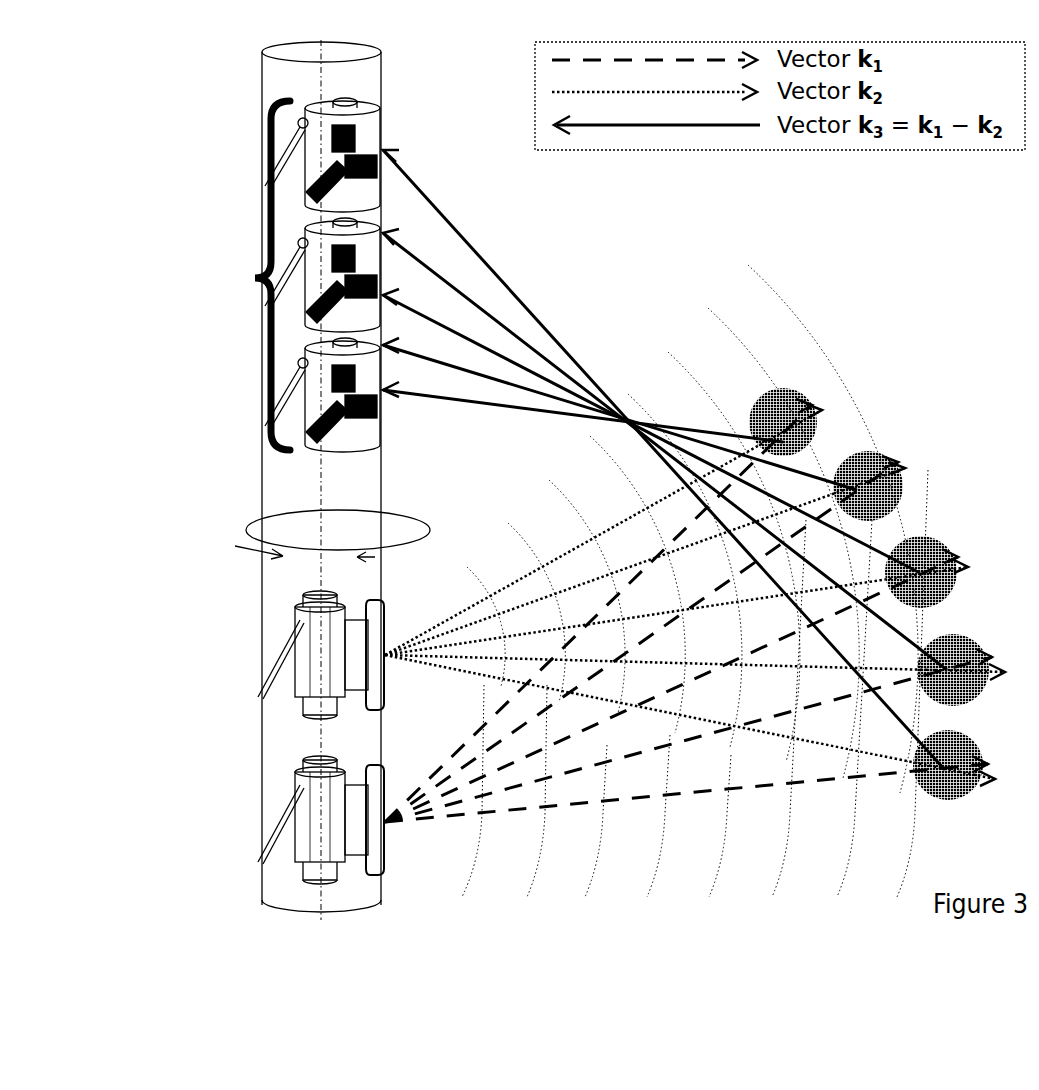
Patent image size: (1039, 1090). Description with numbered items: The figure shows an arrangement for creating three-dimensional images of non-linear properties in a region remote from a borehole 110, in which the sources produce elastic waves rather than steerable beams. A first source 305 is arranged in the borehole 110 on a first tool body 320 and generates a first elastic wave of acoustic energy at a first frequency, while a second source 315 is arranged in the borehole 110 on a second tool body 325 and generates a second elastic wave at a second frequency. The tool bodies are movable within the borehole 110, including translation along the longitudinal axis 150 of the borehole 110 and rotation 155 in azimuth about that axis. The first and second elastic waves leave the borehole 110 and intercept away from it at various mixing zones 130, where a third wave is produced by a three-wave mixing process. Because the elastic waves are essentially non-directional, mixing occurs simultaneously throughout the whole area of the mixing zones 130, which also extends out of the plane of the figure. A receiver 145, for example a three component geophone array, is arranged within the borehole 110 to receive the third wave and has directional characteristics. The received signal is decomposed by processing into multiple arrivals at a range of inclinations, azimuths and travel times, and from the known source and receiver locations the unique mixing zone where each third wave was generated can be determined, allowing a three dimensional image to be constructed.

The borehole 110 is at (271, 68).
The receiver 145 is at (234, 275).
The longitudinal axis 150 is at (321, 487).
The rotation 155 is at (300, 509).
The second source 315 is at (305, 643).
The second tool body 325 is at (307, 705).
The first source 305 is at (305, 812).
The first tool body 320 is at (307, 888).
The mixing zones 130 is at (922, 565).